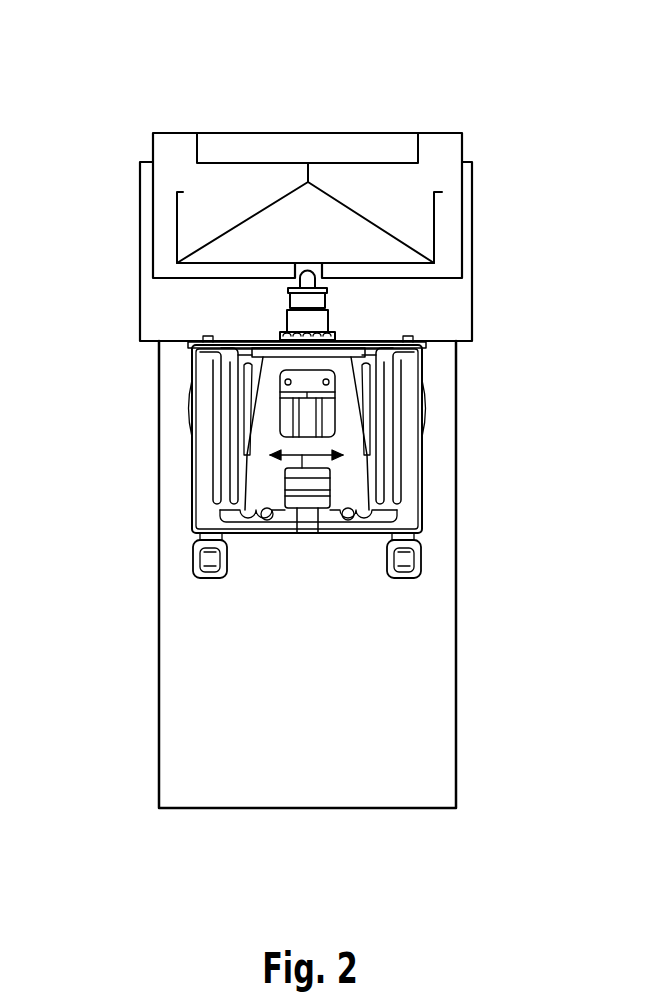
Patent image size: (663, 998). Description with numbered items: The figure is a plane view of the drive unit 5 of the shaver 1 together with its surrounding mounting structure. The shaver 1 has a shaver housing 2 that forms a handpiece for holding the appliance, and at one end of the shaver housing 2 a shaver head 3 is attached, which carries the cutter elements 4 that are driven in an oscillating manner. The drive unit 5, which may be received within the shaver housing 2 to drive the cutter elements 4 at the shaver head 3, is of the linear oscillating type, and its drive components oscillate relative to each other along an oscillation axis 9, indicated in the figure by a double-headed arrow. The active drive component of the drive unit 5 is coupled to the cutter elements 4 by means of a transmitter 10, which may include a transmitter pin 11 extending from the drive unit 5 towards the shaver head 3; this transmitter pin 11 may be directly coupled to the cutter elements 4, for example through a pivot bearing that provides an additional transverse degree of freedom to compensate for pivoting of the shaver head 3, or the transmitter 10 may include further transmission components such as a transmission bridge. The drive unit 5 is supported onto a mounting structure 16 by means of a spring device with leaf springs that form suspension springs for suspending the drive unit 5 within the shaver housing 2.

The shaver 1 is at (488, 134).
The shaver housing 2 is at (158, 420).
The shaver head 3 is at (153, 210).
The cutter elements 4 is at (402, 148).
The drive unit 5 is at (442, 410).
The oscillation axis 9 is at (305, 470).
The transmitter 10 is at (367, 263).
The transmitter pin 11 is at (310, 180).
The mounting structure 16 is at (423, 555).